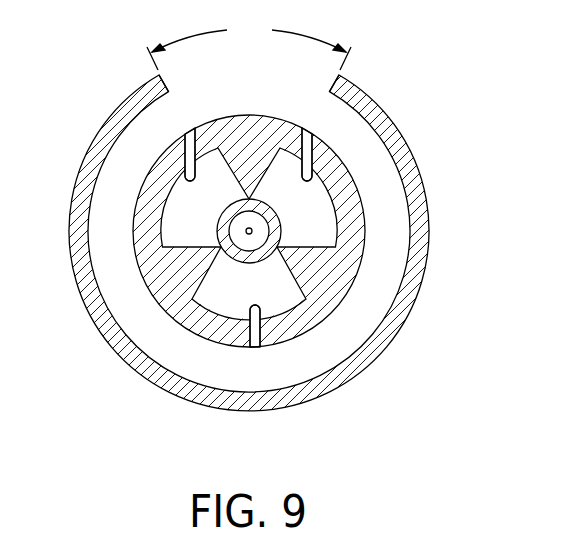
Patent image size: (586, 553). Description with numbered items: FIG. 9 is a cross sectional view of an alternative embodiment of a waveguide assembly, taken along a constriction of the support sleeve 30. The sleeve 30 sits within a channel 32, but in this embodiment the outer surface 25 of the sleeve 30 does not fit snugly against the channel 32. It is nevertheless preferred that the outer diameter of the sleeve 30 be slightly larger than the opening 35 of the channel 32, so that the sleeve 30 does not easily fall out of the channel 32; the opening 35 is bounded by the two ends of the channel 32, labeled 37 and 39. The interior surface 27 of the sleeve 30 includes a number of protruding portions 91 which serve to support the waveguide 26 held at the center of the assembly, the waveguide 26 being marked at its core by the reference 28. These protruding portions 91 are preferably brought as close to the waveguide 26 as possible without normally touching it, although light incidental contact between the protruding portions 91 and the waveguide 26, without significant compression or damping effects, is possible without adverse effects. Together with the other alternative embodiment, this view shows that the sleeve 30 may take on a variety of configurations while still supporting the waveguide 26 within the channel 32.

The outer surface 25 is at (333, 308).
The waveguide 26 is at (223, 239).
The interior surface 27 is at (193, 130).
The shaft bore 28 is at (250, 228).
The support sleeve 30 is at (320, 269).
The channel 32 is at (366, 357).
The opening 35 is at (249, 42).
The first housing end 37 is at (160, 76).
The second housing end 39 is at (338, 76).
The protruding portions 91 is at (243, 158).